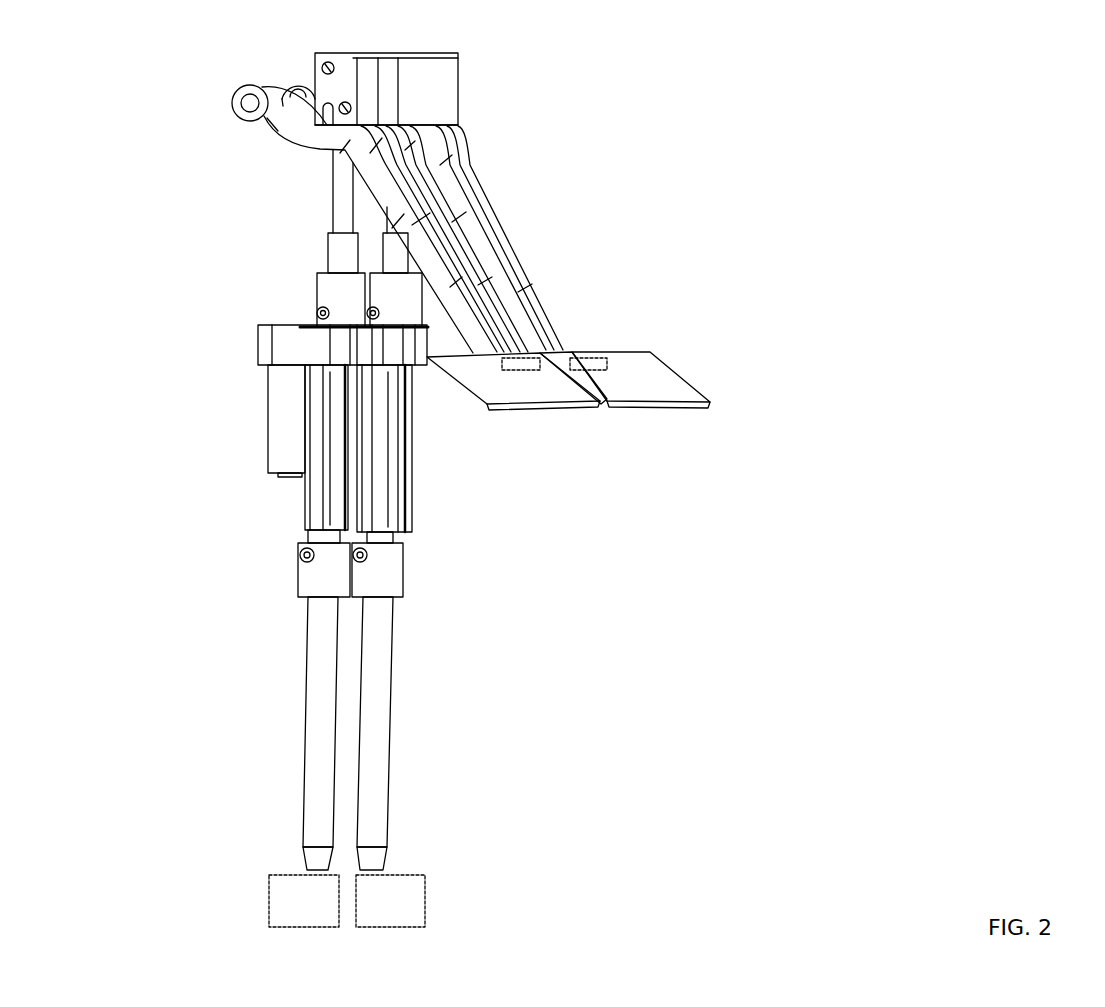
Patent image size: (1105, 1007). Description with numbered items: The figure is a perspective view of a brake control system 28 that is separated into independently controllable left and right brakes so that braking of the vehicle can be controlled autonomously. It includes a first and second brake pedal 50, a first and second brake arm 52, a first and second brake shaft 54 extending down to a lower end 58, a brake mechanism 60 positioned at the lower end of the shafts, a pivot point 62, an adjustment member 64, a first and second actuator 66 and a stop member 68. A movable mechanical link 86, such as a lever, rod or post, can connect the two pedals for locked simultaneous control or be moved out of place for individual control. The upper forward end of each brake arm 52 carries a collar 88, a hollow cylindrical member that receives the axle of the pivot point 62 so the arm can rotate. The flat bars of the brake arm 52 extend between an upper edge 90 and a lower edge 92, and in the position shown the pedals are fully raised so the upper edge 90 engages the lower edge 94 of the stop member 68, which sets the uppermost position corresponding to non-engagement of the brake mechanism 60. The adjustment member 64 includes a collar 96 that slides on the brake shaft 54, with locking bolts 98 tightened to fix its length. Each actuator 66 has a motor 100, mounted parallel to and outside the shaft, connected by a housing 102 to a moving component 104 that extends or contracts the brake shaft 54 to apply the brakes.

The brake control system 28 is at (720, 133).
The brake pedal 50 is at (667, 377).
The brake arm 52 is at (500, 307).
The brake shaft 54 is at (298, 751).
The lower end 58 is at (307, 867).
The brake mechanism 60 is at (270, 895).
The pivot point 62 is at (250, 102).
The adjustment member 64 is at (308, 278).
The actuator 66 is at (262, 483).
The stop member 68 is at (457, 48).
The movable mechanical link 86 is at (583, 360).
The collar 88 is at (240, 82).
The upper edge 90 is at (473, 207).
The lower edge 92 is at (301, 142).
The lower edge 94 is at (442, 123).
The collar 96 is at (320, 273).
The locking bolt 98 is at (316, 312).
The motor 100 is at (282, 428).
The housing 102 is at (268, 340).
The moving component 104 is at (333, 493).